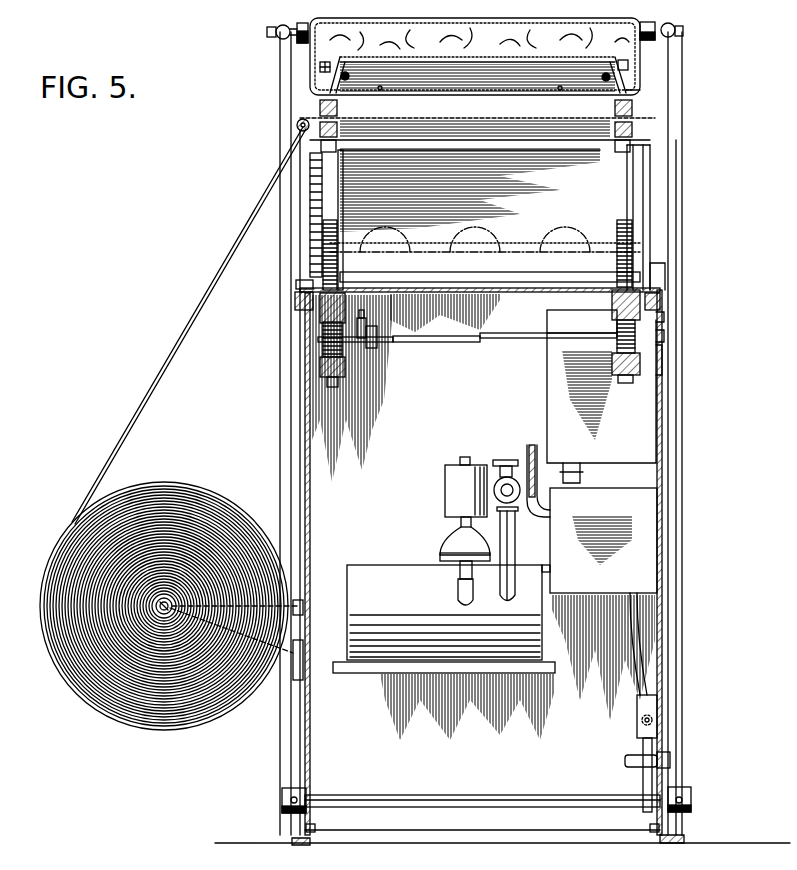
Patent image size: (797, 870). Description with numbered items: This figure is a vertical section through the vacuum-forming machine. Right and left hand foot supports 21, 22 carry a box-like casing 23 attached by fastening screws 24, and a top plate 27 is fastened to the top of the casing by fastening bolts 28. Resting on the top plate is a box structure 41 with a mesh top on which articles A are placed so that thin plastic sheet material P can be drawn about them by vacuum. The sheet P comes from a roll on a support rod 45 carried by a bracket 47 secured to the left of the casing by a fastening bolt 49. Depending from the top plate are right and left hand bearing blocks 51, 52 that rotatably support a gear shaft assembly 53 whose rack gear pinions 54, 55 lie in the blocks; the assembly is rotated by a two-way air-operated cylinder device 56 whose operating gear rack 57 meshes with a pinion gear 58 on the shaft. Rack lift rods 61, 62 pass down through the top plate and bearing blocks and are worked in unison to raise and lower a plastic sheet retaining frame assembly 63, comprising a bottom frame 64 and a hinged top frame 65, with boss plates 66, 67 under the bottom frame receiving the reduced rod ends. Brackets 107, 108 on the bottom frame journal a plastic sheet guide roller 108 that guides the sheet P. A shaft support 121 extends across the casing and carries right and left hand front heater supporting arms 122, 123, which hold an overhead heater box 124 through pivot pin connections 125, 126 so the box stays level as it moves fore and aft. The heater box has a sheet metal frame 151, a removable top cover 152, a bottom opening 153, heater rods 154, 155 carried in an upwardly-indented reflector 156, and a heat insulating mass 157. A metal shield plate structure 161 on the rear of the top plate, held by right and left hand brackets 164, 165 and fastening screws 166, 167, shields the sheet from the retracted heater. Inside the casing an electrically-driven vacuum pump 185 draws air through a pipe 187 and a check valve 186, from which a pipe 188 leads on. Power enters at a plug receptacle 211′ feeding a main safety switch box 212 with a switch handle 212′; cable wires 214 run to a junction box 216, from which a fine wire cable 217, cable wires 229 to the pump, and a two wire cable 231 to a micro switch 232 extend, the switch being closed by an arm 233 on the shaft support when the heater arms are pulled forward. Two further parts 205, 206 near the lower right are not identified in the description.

The right hand foot support 21 is at (680, 838).
The left hand foot support 22 is at (292, 838).
The box-like casing 23 is at (660, 492).
The fastening screws 24 is at (316, 828).
The top plate 27 is at (520, 296).
The fastening bolts 28 is at (295, 300).
The box structure 41 is at (524, 250).
The support rod 45 is at (168, 600).
The bracket 47 is at (288, 652).
The fastening bolt 49 is at (325, 637).
The right hand bearing block 51 is at (612, 370).
The left hand bearing block 52 is at (340, 386).
The gear shaft assembly 53 is at (498, 348).
The right hand rack gear pinion 54 is at (614, 332).
The left hand rack gear pinion 55 is at (345, 365).
The two-way air-operated cylinder device 56 is at (368, 322).
The operating gear rack 57 is at (376, 340).
The pinion gear 58 is at (352, 342).
The rack lift rod 61 is at (616, 226).
The rack lift rod 62 is at (340, 240).
The plastic sheet retaining frame assembly 63 is at (594, 147).
The bottom frame 64 is at (634, 136).
The top frame 65 is at (634, 113).
The boss plate 66 is at (620, 150).
The boss plate 67 is at (347, 153).
The outwardly-extending bracket 107 is at (307, 117).
The plastic sheet guide roller 108 is at (292, 123).
The shaft support 121 is at (474, 797).
The right hand front heater supporting arm 122 is at (676, 748).
The left hand front heater supporting arm 123 is at (283, 745).
The overhead heater box 124 is at (627, 20).
The pivot pin connection 125 is at (684, 31).
The pivot pin connection 126 is at (268, 36).
The sheet metal frame 151 is at (643, 87).
The removable top cover 152 is at (323, 20).
The opening 153 is at (466, 95).
The heater rod 154 is at (327, 80).
The heater rod 155 is at (623, 83).
The reflector 156 is at (336, 90).
The heat insulating mass 157 is at (613, 47).
The metal shield plate structure 161 is at (530, 192).
The right hand bracket 164 is at (652, 230).
The left hand bracket 165 is at (305, 223).
The fastening screw 166 is at (666, 268).
The fastening screw 167 is at (302, 280).
The vacuum pump 185 is at (388, 568).
The check valve 186 is at (500, 472).
The pipe 187 is at (513, 525).
The pipe 188 is at (520, 463).
The nut 205 is at (668, 760).
The rod 206 is at (628, 758).
The plug receptacle 211′ is at (666, 322).
The main safety switch box 212 is at (547, 372).
The switch handle 212′ is at (664, 370).
The cable wires 214 is at (582, 475).
The junction box 216 is at (630, 542).
The fine wire cable 217 is at (532, 447).
The cable wires 229 is at (550, 568).
The two wire cable 231 is at (634, 662).
The micro switch 232 is at (637, 709).
The arm 233 is at (643, 775).
The plastic sheet material P is at (515, 118).
The articles A is at (450, 228).